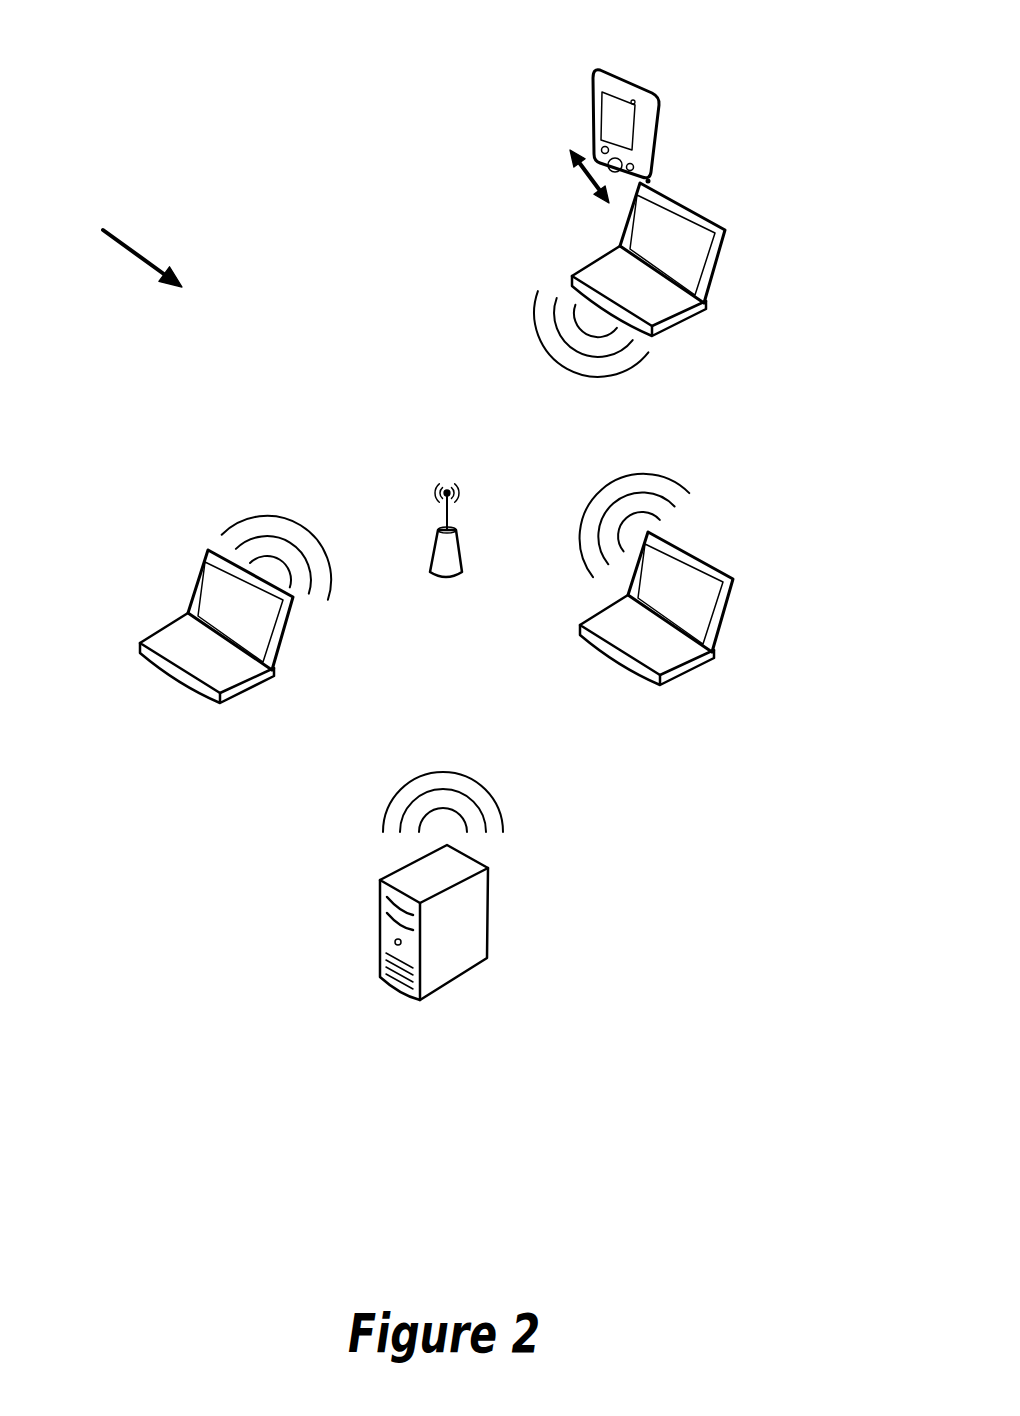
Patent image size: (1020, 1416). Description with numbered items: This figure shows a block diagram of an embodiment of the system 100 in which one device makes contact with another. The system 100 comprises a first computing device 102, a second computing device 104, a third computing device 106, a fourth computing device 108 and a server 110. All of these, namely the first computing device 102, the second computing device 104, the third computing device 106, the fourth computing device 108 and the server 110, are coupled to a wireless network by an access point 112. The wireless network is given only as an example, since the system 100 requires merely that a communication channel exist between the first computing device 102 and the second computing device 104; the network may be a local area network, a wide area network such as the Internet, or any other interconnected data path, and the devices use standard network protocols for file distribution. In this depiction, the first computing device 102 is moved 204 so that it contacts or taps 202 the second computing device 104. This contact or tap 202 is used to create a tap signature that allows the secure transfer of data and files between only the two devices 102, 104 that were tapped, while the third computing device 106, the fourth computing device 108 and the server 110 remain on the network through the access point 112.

The system 100 is at (126, 243).
The first computing device 102 is at (656, 96).
The second computing device 104 is at (722, 232).
The third computing device 106 is at (182, 688).
The fourth computing device 108 is at (610, 663).
The server 110 is at (450, 983).
The access point 112 is at (455, 578).
The contact or tap 202 is at (650, 180).
The movement 204 is at (590, 178).